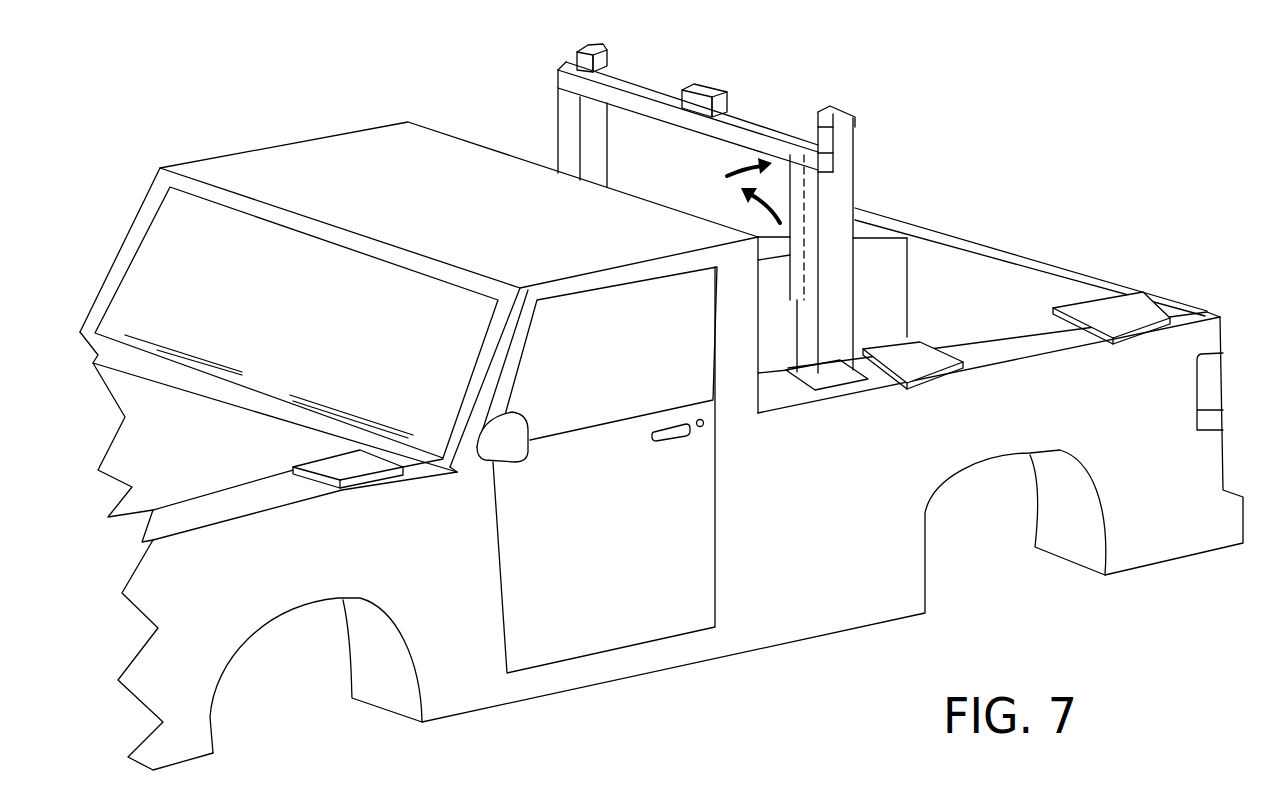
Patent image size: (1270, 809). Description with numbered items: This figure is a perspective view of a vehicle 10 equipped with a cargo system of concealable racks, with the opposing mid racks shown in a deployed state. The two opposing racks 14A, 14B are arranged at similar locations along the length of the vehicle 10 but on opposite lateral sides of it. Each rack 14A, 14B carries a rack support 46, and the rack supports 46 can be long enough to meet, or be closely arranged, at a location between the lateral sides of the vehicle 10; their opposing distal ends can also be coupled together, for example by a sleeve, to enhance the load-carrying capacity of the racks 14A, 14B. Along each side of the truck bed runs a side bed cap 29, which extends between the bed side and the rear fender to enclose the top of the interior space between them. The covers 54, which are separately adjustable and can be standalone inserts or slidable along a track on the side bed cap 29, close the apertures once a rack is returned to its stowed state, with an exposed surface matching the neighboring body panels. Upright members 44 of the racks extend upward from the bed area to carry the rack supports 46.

The vehicle 10 is at (380, 97).
The rack 14A is at (872, 180).
The rack 14B is at (545, 92).
The side bed cap 29 is at (1010, 343).
The upright post 44 is at (570, 137).
The rack support 46 is at (653, 88).
The cover 54 is at (1127, 317).